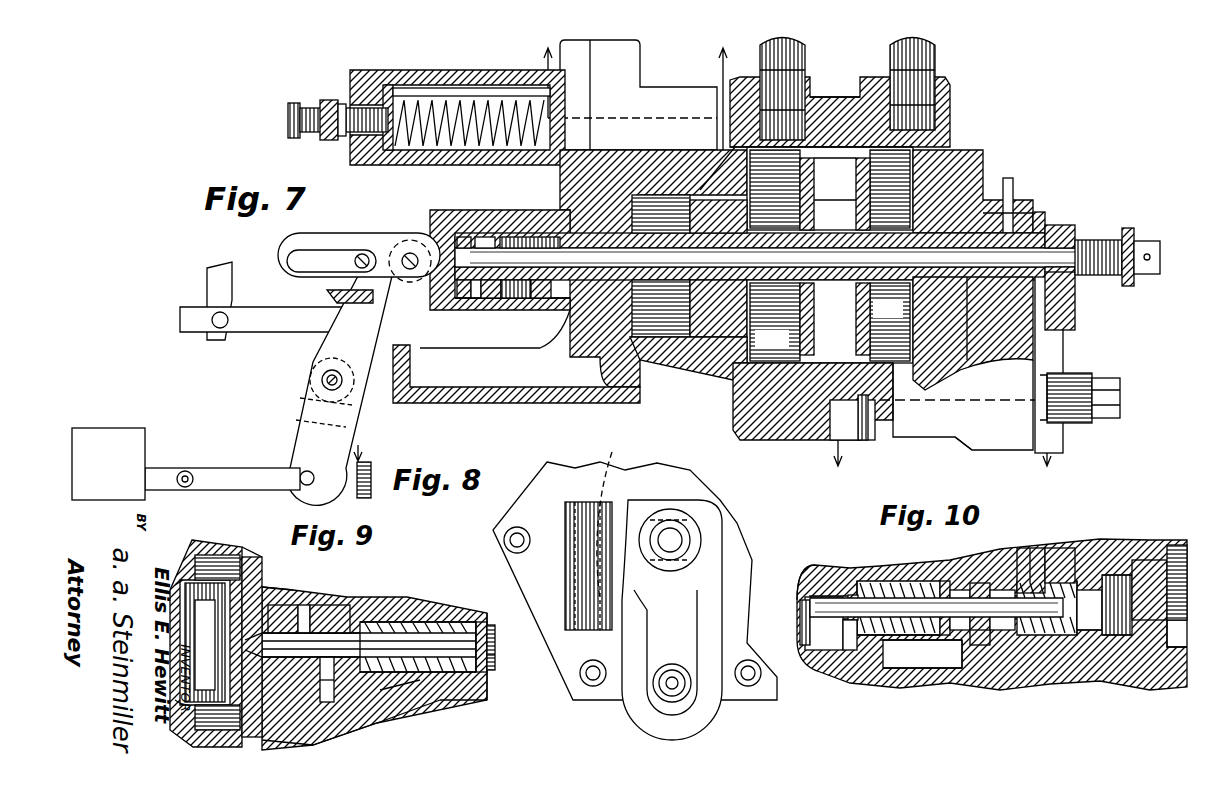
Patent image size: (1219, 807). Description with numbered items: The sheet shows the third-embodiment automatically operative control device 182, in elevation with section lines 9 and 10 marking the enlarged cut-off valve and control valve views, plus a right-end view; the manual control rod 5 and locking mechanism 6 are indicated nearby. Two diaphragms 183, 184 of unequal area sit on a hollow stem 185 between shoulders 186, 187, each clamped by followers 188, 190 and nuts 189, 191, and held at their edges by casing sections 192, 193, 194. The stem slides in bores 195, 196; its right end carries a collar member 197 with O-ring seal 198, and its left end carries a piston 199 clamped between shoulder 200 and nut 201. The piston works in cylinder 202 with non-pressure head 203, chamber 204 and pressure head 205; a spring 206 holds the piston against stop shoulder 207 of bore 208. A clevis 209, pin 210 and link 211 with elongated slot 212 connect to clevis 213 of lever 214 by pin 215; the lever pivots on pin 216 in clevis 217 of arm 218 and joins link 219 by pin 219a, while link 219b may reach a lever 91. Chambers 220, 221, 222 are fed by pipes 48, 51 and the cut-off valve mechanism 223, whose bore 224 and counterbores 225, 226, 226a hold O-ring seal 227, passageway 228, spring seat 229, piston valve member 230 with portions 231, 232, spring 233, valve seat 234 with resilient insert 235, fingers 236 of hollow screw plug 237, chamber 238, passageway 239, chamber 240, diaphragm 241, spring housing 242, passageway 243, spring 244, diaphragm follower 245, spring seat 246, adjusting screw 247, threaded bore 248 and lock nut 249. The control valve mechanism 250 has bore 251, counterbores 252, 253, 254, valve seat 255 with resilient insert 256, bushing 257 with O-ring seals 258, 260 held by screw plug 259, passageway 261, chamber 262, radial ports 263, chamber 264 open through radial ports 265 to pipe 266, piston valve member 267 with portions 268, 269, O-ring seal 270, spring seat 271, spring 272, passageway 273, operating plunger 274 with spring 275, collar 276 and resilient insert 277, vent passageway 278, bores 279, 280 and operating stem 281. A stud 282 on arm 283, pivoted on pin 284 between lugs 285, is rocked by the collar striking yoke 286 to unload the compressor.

In FIG. 7, the manual control rod 5 is at (372, 465).
In FIG. 7, the locking mechanism 6 is at (363, 444).
In FIG. 7, the section line 9— 9 is at (636, 93).
In FIG. 7, the section line 10— 10 is at (944, 462).
In FIG. 7, the pipe 48 is at (768, 55).
In FIG. 7, the pipe 51 is at (895, 55).
In FIG. 7, the lever 91 is at (210, 275).
In FIG. 7, the automatically operative control device 182 is at (840, 92).
In FIG. 7, the diaphragm 183 is at (642, 192).
In FIG. 7, the diaphragm 184 is at (936, 183).
In FIG. 7, the hollow stem 185 is at (808, 298).
In FIG. 8, the hollow stem 185 is at (682, 545).
In FIG. 7, the shoulder 186 is at (702, 198).
In FIG. 7, the shoulder 187 is at (922, 217).
In FIG. 7, the diaphragm followers 188 is at (675, 395).
In FIG. 7, the nut 189 is at (715, 345).
In FIG. 7, the diaphragm followers 190 is at (960, 166).
In FIG. 7, the nut 191 is at (953, 333).
In FIG. 7, the casing section 192 is at (725, 360).
In FIG. 9, the casing section 192 is at (455, 695).
In FIG. 7, the casing section 193 is at (742, 372).
In FIG. 7, the casing section 194 is at (871, 70).
In FIG. 8, the casing section 194 is at (545, 500).
In FIG. 10, the casing section 194 is at (805, 580).
In FIG. 7, the bore 195 is at (1038, 216).
In FIG. 7, the bore 196 is at (590, 300).
In FIG. 7, the collar member 197 is at (1150, 241).
In FIG. 8, the collar member 197 is at (690, 535).
In FIG. 7, the O-ring seal 198 is at (1128, 228).
In FIG. 7, the piston 199 is at (465, 305).
In FIG. 7, the shoulder 200 is at (488, 300).
In FIG. 7, the nut 201 is at (452, 213).
In FIG. 7, the cylinder 202 is at (540, 235).
In FIG. 7, the non-pressure head 203 is at (540, 300).
In FIG. 7, the chamber 204 is at (470, 300).
In FIG. 7, the pressure head 205 is at (456, 290).
In FIG. 7, the spring 206 is at (512, 300).
In FIG. 7, the stop shoulder 207 is at (484, 235).
In FIG. 7, the bore 208 is at (470, 235).
In FIG. 7, the clevis 209 is at (445, 240).
In FIG. 7, the pin 210 is at (404, 255).
In FIG. 7, the link 211 is at (347, 240).
In FIG. 7, the elongated slot 212 is at (298, 255).
In FIG. 7, the clevis 213 is at (328, 295).
In FIG. 7, the lever 214 is at (318, 330).
In FIG. 7, the pin 215 is at (362, 253).
In FIG. 7, the pin 216 is at (325, 372).
In FIG. 7, the clevis 217 is at (362, 392).
In FIG. 7, the arm 218 is at (492, 395).
In FIG. 7, the link 219 is at (262, 468).
In FIG. 7, the pin 219a is at (305, 470).
In FIG. 7, the link 219b is at (232, 330).
In FIG. 7, the chamber 220 is at (752, 147).
In FIG. 7, the chamber 221 is at (915, 150).
In FIG. 7, the chamber 222 is at (652, 340).
In FIG. 7, the cut-off valve mechanism 223 is at (635, 45).
In FIG. 9, the cut-off valve mechanism 223 is at (442, 745).
In FIG. 9, the bore 224 is at (496, 640).
In FIG. 9, the counterbore 225 is at (478, 620).
In FIG. 9, the counterbore 226 is at (335, 607).
In FIG. 9, the counterbore 226a is at (280, 605).
In FIG. 9, the O-ring seal 227 is at (485, 625).
In FIG. 7, the passageway 228 is at (628, 168).
In FIG. 9, the passageway 228 is at (395, 685).
In FIG. 9, the spring seat 229 is at (476, 625).
In FIG. 9, the piston valve member 230 is at (440, 630).
In FIG. 9, the reduced cylindrical portion 231 is at (425, 620).
In FIG. 9, the reduced cylindrical portion 232 is at (252, 557).
In FIG. 9, the spring 233 is at (430, 622).
In FIG. 9, the valve seat 234 is at (304, 605).
In FIG. 9, the resilient insert 235 is at (328, 657).
In FIG. 9, the fingers 236 is at (270, 585).
In FIG. 9, the hollow screw plug 237 is at (245, 550).
In FIG. 9, the chamber 238 is at (335, 665).
In FIG. 7, the passageway 239 is at (718, 135).
In FIG. 9, the passageway 239 is at (495, 657).
In FIG. 9, the chamber 240 is at (300, 735).
In FIG. 9, the diaphragm 241 is at (255, 748).
In FIG. 7, the spring housing 242 is at (532, 82).
In FIG. 9, the spring housing 242 is at (182, 580).
In FIG. 7, the passageway 243 is at (565, 180).
In FIG. 9, the passageway 243 is at (355, 725).
In FIG. 7, the spring 244 is at (466, 90).
In FIG. 9, the spring 244 is at (200, 552).
In FIG. 9, the diaphragm follower 245 is at (200, 580).
In FIG. 7, the spring seat 246 is at (392, 88).
In FIG. 7, the adjusting screw 247 is at (293, 104).
In FIG. 7, the threaded bore 248 is at (330, 100).
In FIG. 7, the lock nut 249 is at (340, 136).
In FIG. 7, the control valve mechanism 250 is at (979, 447).
In FIG. 10, the control valve mechanism 250 is at (958, 745).
In FIG. 7, the bore 251 is at (915, 440).
In FIG. 10, the bore 251 is at (820, 598).
In FIG. 10, the counterbore 252 is at (875, 583).
In FIG. 10, the counterbore 253 is at (935, 582).
In FIG. 10, the counterbore 254 is at (1030, 548).
In FIG. 10, the valve seat 255 is at (1005, 583).
In FIG. 10, the resilient insert 256 is at (975, 585).
In FIG. 10, the bushing 257 is at (1077, 580).
In FIG. 10, the O-ring seal 258 is at (1115, 575).
In FIG. 10, the screw plug 259 is at (1058, 548).
In FIG. 10, the O-ring seal 260 is at (1088, 590).
In FIG. 7, the passageway 261 is at (1050, 330).
In FIG. 10, the passageway 261 is at (1035, 548).
In FIG. 10, the chamber 262 is at (1055, 635).
In FIG. 10, the radial ports 263 is at (1000, 585).
In FIG. 7, the chamber 264 is at (988, 225).
In FIG. 7, the radial ports 265 is at (1076, 300).
In FIG. 10, the radial ports 265 is at (936, 607).
In FIG. 7, the pipe 266 is at (1012, 195).
In FIG. 10, the piston valve member 267 is at (870, 582).
In FIG. 10, the reduced cylindrical portion 268 is at (850, 652).
In FIG. 10, the reduced cylindrical portion 269 is at (1005, 635).
In FIG. 10, the O-ring seal 270 is at (870, 640).
In FIG. 10, the spring seat 271 is at (915, 645).
In FIG. 10, the spring 272 is at (960, 660).
In FIG. 7, the passageway 273 is at (788, 440).
In FIG. 10, the passageway 273 is at (940, 668).
In FIG. 10, the operating plunger 274 is at (1165, 650).
In FIG. 10, the spring 275 is at (985, 645).
In FIG. 10, the collar 276 is at (1115, 640).
In FIG. 10, the resilient insert 277 is at (1090, 635).
In FIG. 7, the passageway 278 is at (865, 442).
In FIG. 10, the passageway 278 is at (805, 650).
In FIG. 10, the bore 279 is at (1125, 573).
In FIG. 10, the bore 280 is at (1150, 560).
In FIG. 7, the operating stem 281 is at (1050, 412).
In FIG. 10, the operating stem 281 is at (1172, 545).
In FIG. 7, the stud 282 is at (1105, 380).
In FIG. 8, the stud 282 is at (685, 695).
In FIG. 7, the arm 283 is at (1076, 318).
In FIG. 8, the arm 283 is at (690, 590).
In FIG. 8, the pin 284 is at (617, 518).
In FIG. 8, the lugs 285 is at (575, 502).
In FIG. 7, the yoke 286 is at (1062, 228).
In FIG. 8, the yoke 286 is at (700, 510).